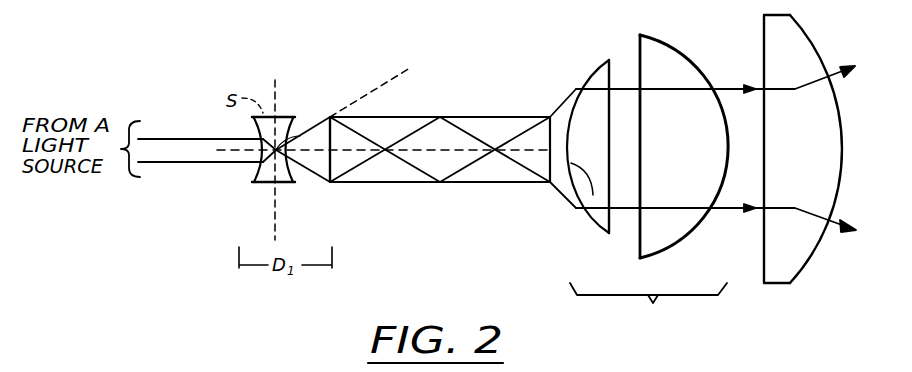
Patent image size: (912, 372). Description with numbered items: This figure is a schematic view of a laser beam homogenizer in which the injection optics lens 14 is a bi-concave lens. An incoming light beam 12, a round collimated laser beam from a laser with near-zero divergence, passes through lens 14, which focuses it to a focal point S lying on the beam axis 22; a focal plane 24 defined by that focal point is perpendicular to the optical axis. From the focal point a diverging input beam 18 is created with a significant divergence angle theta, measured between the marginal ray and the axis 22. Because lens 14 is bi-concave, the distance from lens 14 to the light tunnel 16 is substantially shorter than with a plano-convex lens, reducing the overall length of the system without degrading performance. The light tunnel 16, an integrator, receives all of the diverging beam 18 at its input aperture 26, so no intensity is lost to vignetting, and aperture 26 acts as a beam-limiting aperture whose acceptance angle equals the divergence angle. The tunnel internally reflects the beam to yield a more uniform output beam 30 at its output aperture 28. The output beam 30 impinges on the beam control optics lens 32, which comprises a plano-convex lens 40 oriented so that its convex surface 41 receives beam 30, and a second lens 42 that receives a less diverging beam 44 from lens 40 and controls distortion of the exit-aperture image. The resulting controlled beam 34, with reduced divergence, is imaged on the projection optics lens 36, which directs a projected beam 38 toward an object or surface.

The incoming light beam 12 is at (200, 163).
The injection optics lens 14 is at (255, 173).
The light tunnel 16 is at (465, 118).
The input beam 18 is at (319, 181).
The beam axis 22 is at (440, 150).
The focal plane 24 is at (277, 88).
The input aperture 26 is at (317, 122).
The output aperture 28 is at (552, 116).
The output beam 30 is at (552, 184).
The beam control optics lens 32 is at (648, 308).
The controlled beam 34 is at (737, 206).
The projection optics lens 36 is at (790, 285).
The projected beam 38 is at (845, 203).
The plano-convex lens 40 is at (600, 222).
The convex surface 41 is at (583, 207).
The lens 42 is at (662, 256).
The less diverging beam 44 is at (618, 90).